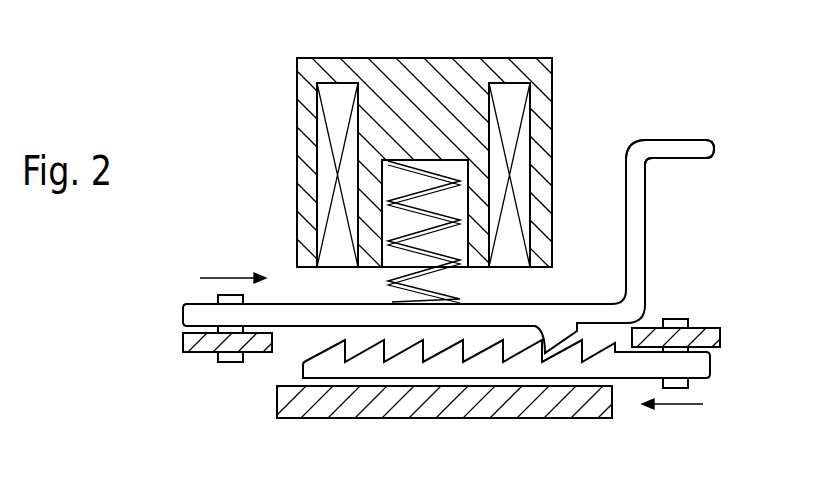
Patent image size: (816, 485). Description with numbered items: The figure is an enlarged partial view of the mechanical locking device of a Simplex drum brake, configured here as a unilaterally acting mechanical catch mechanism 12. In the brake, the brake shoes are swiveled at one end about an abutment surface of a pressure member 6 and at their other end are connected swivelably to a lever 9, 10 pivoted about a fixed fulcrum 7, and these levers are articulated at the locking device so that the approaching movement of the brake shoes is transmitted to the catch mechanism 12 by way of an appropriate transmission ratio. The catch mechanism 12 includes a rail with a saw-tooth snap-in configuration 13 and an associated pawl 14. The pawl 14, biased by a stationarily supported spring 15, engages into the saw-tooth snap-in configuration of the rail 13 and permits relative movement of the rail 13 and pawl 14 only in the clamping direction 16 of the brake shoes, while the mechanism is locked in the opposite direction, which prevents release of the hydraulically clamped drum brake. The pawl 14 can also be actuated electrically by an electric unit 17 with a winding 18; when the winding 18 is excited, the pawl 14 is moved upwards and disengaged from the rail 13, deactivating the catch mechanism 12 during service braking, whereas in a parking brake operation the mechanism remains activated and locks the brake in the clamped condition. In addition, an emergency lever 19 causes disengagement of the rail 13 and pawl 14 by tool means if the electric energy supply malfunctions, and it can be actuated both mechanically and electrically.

The pressure member 6 is at (212, 28).
The fixed fulcrum 7 is at (213, 4).
The lever 9 is at (183, 345).
The lever 10 is at (697, 327).
The mechanical catch mechanism 12 is at (270, 365).
The rail with saw-tooth snap-in configuration 13 is at (527, 368).
The pawl 14 is at (554, 311).
The spring 15 is at (397, 283).
The clamping direction 16 is at (216, 275).
The electric unit 17 is at (440, 59).
The winding 18 is at (333, 110).
The emergency lever 19 is at (673, 145).